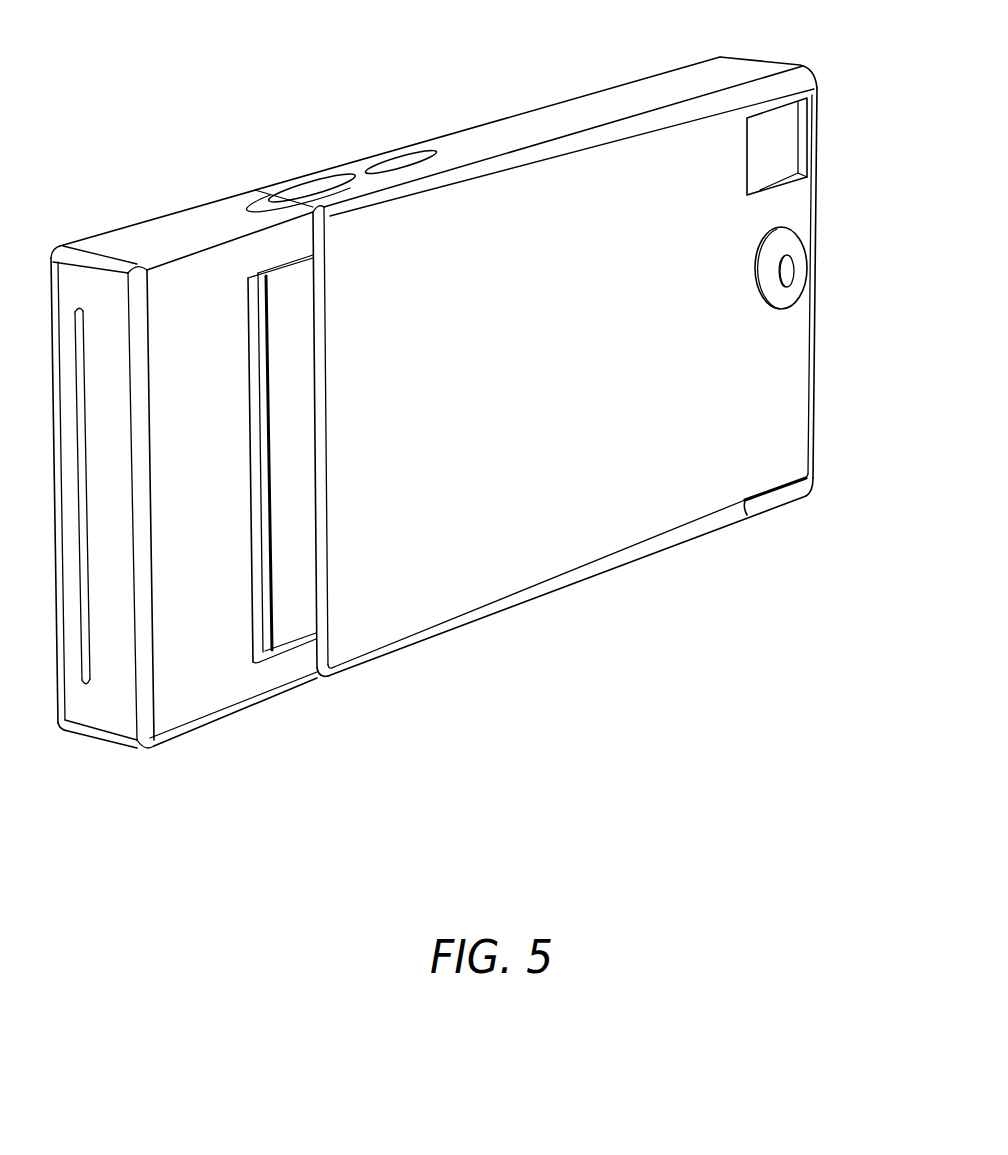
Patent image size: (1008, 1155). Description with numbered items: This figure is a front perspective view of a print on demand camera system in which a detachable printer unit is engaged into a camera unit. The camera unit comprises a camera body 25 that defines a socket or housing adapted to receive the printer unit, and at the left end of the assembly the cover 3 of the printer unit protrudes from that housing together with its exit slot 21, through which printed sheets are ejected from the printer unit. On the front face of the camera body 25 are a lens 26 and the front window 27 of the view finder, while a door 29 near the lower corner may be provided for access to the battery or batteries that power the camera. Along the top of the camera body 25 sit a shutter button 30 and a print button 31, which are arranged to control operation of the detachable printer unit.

The cover 3 is at (184, 461).
The exit slot 21 is at (78, 347).
The camera body 25 is at (576, 361).
The lens 26 is at (788, 270).
The front window 27 is at (780, 138).
The door 29 is at (770, 498).
The shutter button 30 is at (304, 186).
The print button 31 is at (398, 158).